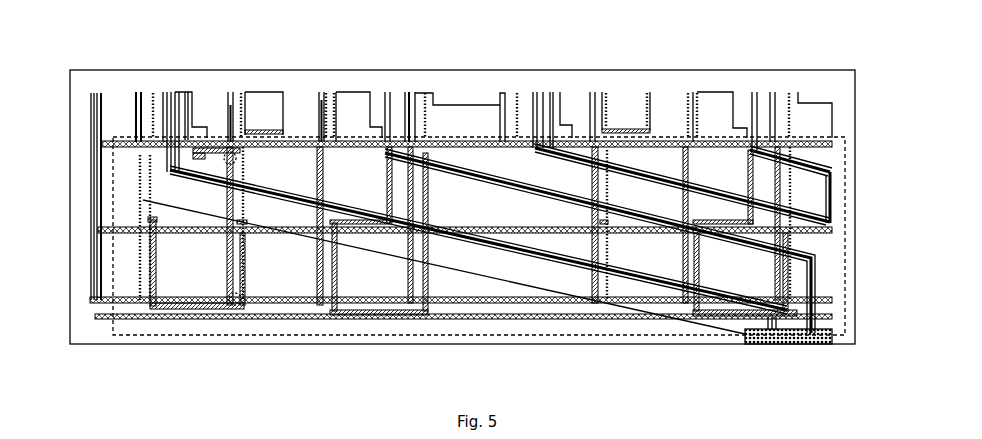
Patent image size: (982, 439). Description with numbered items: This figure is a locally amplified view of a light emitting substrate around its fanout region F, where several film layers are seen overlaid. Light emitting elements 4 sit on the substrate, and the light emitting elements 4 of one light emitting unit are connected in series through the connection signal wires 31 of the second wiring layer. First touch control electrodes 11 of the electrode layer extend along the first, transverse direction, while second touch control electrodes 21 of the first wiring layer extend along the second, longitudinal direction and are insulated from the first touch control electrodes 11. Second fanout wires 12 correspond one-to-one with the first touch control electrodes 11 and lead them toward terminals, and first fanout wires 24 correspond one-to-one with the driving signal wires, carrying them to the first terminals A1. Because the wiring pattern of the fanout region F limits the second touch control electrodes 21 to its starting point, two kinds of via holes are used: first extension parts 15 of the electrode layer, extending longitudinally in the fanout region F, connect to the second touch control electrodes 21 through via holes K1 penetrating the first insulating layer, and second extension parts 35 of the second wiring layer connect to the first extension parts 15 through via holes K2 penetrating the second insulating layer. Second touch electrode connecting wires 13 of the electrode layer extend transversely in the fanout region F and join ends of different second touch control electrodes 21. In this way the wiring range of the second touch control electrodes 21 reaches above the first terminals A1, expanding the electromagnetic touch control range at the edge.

The second fanout wires 12 is at (97, 143).
The second touch control electrodes 21 is at (321, 100).
The connection signal wires 31 is at (790, 97).
The first touch control electrodes 11 is at (820, 317).
The light emitting elements 4 is at (150, 219).
The via holes K1 is at (225, 160).
The via holes K2 is at (237, 237).
The first extension parts 15 is at (229, 207).
The second extension parts 35 is at (230, 268).
The first fanout wires 24 is at (308, 190).
The second touch electrode connecting wires 13 is at (457, 300).
The first terminals A1 is at (796, 344).
The fanout region F is at (845, 273).